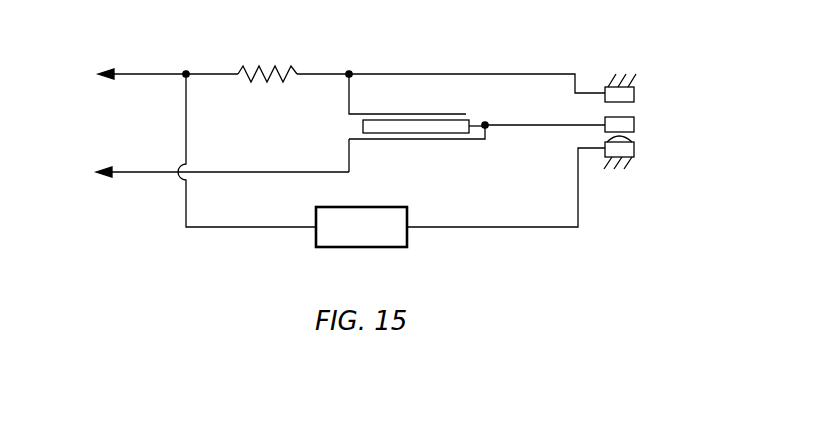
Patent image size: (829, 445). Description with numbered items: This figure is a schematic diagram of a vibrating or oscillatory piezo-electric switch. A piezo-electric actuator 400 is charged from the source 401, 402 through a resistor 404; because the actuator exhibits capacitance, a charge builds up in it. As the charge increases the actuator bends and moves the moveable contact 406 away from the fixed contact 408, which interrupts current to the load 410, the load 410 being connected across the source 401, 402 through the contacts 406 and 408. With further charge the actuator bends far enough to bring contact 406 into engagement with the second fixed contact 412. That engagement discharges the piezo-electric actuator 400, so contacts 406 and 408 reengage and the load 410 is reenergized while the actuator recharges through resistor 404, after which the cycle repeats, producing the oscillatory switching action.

The piezo-electric actuator 400 is at (438, 143).
The source terminal 401 is at (117, 75).
The source terminal 402 is at (199, 173).
The resistor 404 is at (261, 67).
The moveable contact 406 is at (634, 125).
The fixed contact 408 is at (634, 148).
The load 410 is at (396, 248).
The fixed contact 412 is at (635, 92).